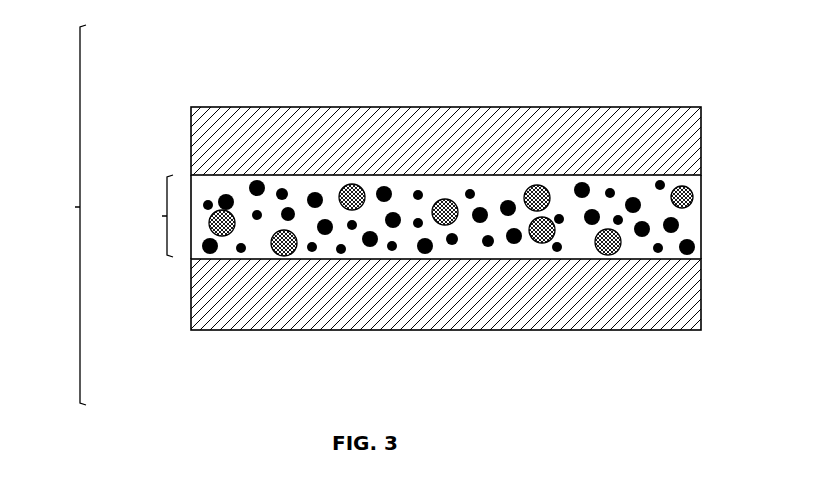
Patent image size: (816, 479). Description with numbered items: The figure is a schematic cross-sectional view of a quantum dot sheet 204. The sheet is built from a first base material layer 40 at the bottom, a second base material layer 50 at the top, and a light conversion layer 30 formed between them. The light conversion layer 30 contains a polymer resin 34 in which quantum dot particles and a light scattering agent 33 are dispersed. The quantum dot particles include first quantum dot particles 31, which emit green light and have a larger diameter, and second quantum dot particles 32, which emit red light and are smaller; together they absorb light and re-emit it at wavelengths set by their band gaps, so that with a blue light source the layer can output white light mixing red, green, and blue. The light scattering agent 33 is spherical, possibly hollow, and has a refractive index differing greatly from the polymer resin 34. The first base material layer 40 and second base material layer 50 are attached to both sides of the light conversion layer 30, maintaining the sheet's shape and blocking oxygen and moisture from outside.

The quantum dot sheet 204 is at (51, 215).
The second base material layer 50 is at (428, 129).
The first base material layer 40 is at (471, 305).
The light conversion layer 30 is at (406, 216).
The first quantum dot particles 31 is at (527, 259).
The second quantum dot particles 32 is at (498, 259).
The light scattering agent 33 is at (549, 175).
The polymer resin 34 is at (488, 176).